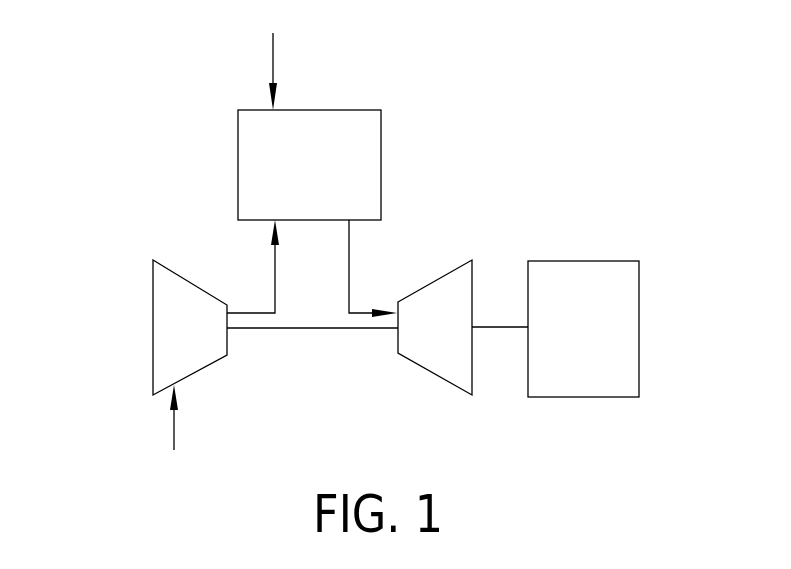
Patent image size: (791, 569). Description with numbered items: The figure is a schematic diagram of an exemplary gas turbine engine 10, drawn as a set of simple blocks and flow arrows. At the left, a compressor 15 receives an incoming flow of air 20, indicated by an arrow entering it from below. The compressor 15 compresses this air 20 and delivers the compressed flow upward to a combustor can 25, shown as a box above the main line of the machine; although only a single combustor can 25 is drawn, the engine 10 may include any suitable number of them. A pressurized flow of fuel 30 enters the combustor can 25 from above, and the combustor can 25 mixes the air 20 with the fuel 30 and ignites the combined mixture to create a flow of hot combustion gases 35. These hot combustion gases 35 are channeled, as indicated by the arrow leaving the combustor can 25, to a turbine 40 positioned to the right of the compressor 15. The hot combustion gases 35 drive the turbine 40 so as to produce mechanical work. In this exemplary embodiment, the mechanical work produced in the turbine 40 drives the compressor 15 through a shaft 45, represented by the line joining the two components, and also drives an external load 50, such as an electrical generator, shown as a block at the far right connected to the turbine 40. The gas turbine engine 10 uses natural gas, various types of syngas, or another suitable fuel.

The gas turbine engine 10 is at (129, 164).
The compressor 15 is at (172, 341).
The flow of air 20 is at (174, 430).
The combustor can 25 is at (294, 180).
The flow of fuel 30 is at (273, 53).
The flow of hot combustion gases 35 is at (360, 312).
The turbine 40 is at (417, 342).
The shaft 45 is at (500, 318).
The external load 50 is at (567, 342).